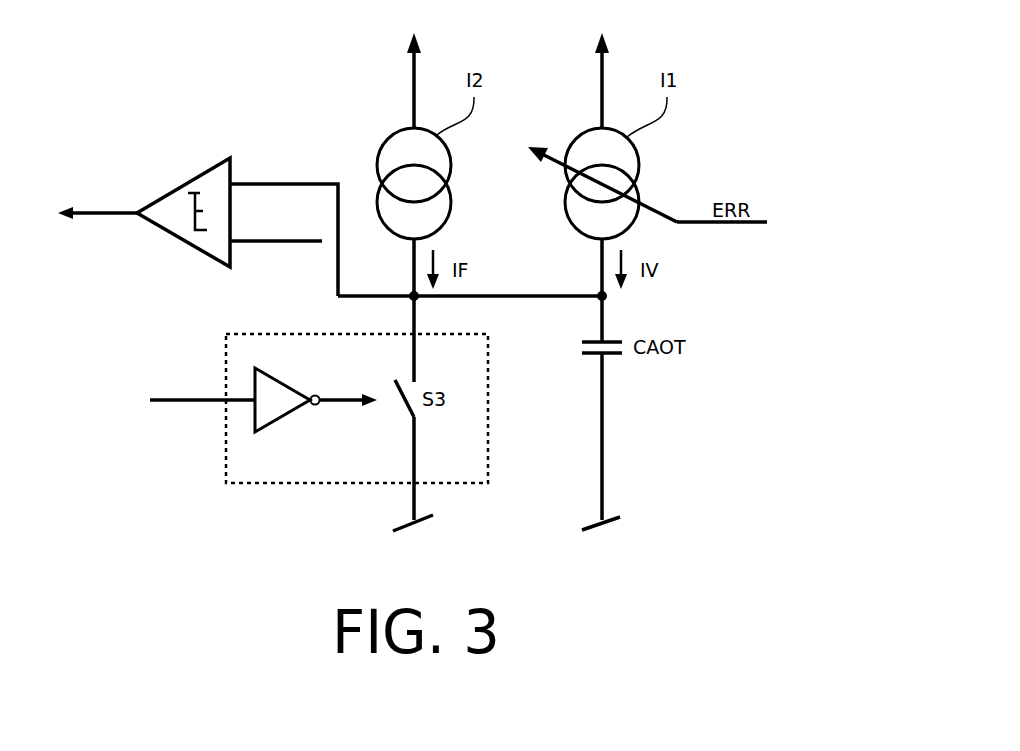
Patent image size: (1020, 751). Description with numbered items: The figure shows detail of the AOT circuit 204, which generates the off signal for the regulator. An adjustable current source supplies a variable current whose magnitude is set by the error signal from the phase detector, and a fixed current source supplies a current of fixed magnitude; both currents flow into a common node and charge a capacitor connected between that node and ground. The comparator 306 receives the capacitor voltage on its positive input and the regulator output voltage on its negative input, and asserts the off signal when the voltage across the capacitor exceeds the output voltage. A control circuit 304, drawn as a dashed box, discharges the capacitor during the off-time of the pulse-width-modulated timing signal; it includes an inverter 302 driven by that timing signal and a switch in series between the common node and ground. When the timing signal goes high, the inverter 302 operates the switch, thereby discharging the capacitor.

The comparator 306 is at (187, 182).
The inverter 302 is at (316, 417).
The control circuit 304 is at (319, 442).
The AOT circuit 204 is at (798, 281).